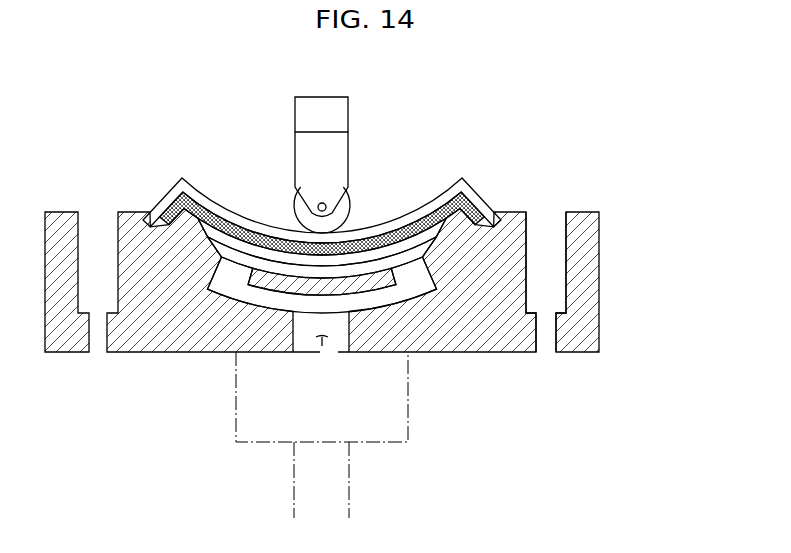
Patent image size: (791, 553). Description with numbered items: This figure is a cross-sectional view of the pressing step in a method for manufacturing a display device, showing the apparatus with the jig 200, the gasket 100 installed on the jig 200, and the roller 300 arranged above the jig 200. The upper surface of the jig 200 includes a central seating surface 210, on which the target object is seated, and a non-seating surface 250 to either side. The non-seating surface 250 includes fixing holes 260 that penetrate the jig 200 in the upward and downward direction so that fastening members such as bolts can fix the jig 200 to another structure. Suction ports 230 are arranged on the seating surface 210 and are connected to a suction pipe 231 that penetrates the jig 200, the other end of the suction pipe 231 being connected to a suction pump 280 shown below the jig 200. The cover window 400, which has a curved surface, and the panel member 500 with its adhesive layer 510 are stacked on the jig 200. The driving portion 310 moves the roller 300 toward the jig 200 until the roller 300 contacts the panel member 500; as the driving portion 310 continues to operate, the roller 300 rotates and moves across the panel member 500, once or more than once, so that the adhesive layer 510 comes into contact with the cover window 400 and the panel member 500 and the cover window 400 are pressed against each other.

The gasket 100 is at (495, 202).
The jig 200 is at (371, 252).
The seating surface 210 is at (376, 282).
The suction port 230 is at (410, 272).
The suction pipe 231 is at (322, 348).
The non-seating surface 250 is at (592, 207).
The fixing hole 260 is at (552, 218).
The suction pump 280 is at (408, 417).
The roller 300 is at (353, 165).
The driving portion 310 is at (345, 115).
The cover window 400 is at (198, 228).
The panel member 500 is at (200, 200).
The adhesive layer 510 is at (258, 237).